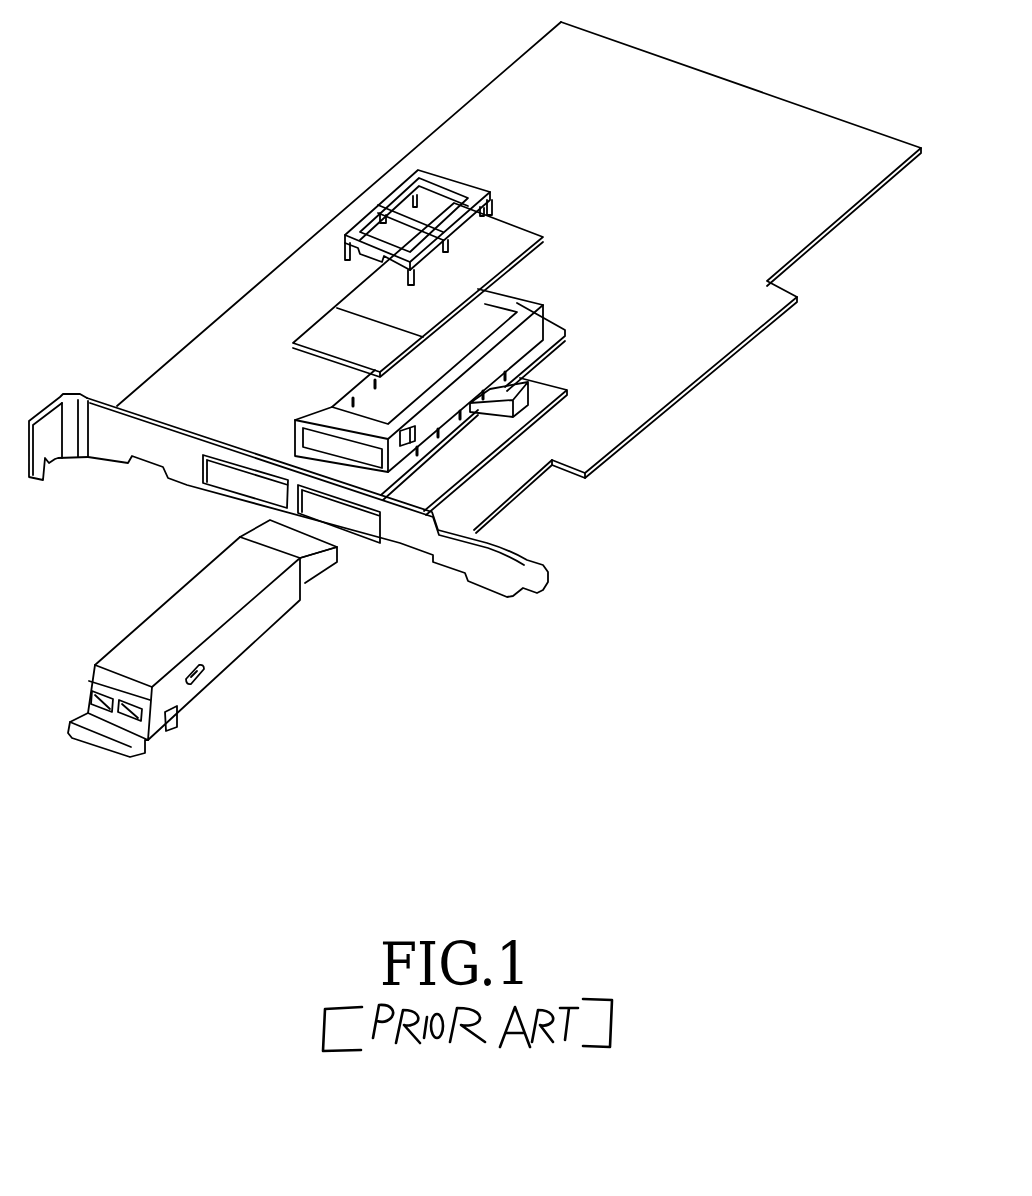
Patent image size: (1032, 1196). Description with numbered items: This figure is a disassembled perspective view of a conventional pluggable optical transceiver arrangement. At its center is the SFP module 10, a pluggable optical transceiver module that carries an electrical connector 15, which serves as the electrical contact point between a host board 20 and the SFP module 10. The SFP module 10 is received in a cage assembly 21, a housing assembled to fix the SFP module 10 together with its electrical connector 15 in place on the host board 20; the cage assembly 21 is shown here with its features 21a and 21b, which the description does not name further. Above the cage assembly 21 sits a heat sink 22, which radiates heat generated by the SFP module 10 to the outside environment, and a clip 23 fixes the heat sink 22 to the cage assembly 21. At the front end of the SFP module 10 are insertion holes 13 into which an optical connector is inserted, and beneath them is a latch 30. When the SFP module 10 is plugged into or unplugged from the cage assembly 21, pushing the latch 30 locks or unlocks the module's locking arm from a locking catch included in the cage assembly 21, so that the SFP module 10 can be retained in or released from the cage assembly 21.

The SFP module 10 is at (206, 669).
The insertion holes 13 is at (124, 714).
The electrical connector 15 is at (313, 573).
The host board 20 is at (487, 108).
The cage assembly 21 is at (335, 384).
The latch hole and terminals of cage 21a is at (412, 434).
The insertion opening of cage 21b is at (330, 445).
The heat sink 22 is at (353, 287).
The clip 23 is at (400, 187).
The latch 30 is at (139, 760).